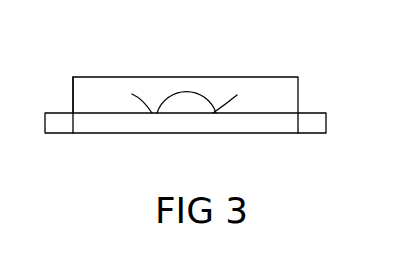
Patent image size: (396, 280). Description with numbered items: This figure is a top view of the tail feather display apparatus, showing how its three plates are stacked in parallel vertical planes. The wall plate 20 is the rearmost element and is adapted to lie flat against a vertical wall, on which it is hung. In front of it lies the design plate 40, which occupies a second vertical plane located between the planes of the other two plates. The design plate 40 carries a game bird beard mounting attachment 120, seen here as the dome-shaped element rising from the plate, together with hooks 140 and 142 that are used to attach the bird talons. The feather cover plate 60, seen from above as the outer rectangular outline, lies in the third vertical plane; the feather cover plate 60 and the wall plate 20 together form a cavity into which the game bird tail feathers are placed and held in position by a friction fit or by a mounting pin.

The wall plate 20 is at (187, 133).
The design plate 40 is at (93, 113).
The feather cover plate 60 is at (158, 77).
The game bird beard mounting attachment 120 is at (193, 93).
The hook 140 is at (237, 95).
The hook 142 is at (124, 113).